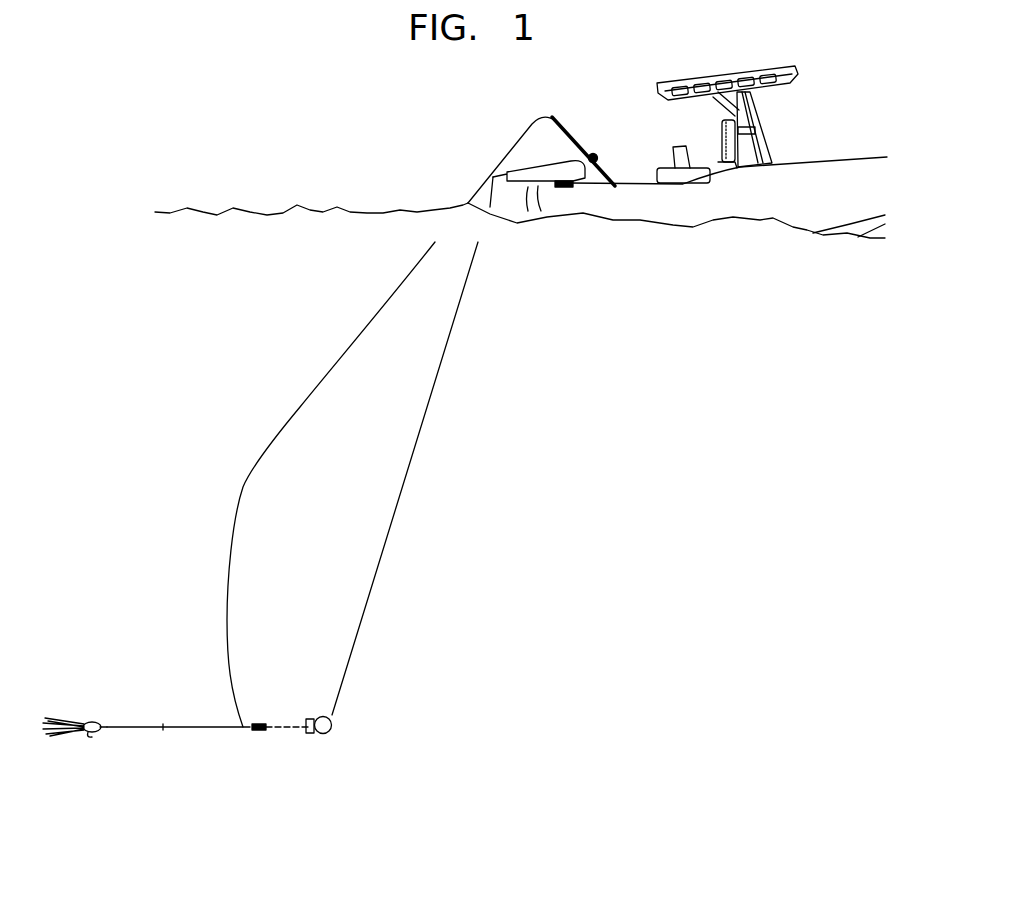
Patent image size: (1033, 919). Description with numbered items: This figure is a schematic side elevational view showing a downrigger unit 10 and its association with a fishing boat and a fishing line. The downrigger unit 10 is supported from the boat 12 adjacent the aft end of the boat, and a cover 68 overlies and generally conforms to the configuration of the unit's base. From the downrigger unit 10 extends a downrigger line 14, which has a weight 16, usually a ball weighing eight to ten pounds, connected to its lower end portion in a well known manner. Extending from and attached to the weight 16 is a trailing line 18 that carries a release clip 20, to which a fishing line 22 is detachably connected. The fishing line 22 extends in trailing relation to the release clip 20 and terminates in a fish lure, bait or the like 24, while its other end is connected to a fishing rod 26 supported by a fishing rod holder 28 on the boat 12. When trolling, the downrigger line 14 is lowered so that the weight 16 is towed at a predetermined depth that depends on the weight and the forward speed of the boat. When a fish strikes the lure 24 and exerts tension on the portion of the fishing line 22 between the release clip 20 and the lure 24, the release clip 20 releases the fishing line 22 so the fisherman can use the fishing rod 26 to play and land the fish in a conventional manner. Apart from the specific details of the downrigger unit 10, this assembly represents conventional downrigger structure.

The downrigger unit 10 is at (538, 180).
The boat 12 is at (795, 199).
The downrigger line 14 is at (400, 495).
The weight 16 is at (332, 727).
The trailing line 18 is at (277, 732).
The release clip 20 is at (253, 731).
The fishing line 22 is at (236, 523).
The fish lure 24 is at (80, 721).
The fishing rod 26 is at (573, 130).
The fishing rod holder 28 is at (612, 179).
The cover 68 is at (572, 188).